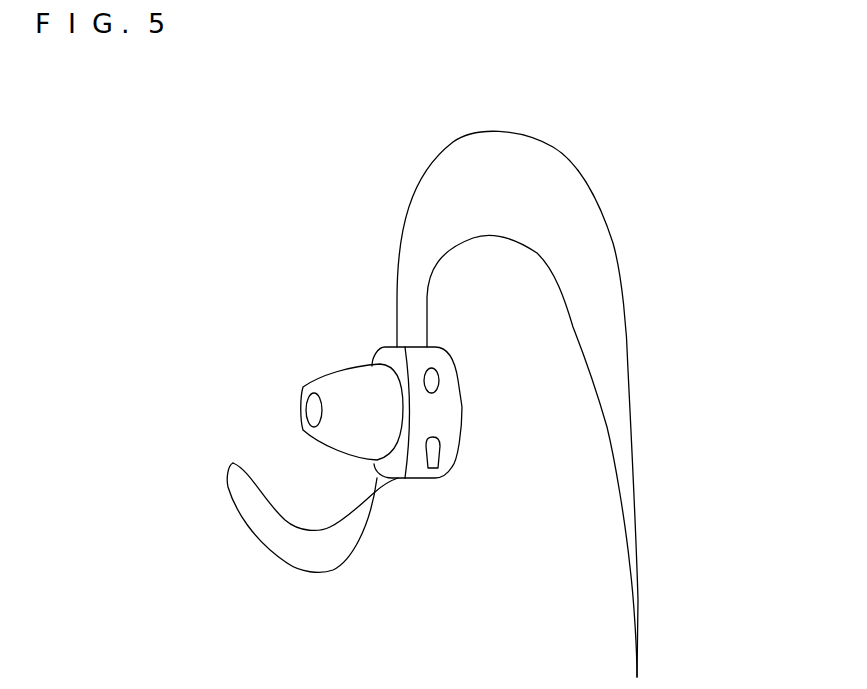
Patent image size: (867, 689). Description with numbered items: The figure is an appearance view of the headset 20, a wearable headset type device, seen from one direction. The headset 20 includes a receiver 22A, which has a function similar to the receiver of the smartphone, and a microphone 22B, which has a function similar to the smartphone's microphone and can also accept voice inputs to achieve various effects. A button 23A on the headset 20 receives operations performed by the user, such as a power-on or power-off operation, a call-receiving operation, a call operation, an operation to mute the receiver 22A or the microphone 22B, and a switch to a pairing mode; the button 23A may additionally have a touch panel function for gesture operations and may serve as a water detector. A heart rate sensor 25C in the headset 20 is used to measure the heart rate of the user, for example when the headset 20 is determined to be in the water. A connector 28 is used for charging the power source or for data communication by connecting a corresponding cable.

The headset 20 is at (605, 157).
The receiver 22A is at (254, 358).
The microphone 22B is at (233, 463).
The button 23A is at (440, 378).
The heart rate sensor 25C is at (312, 381).
The connector 28 is at (430, 468).